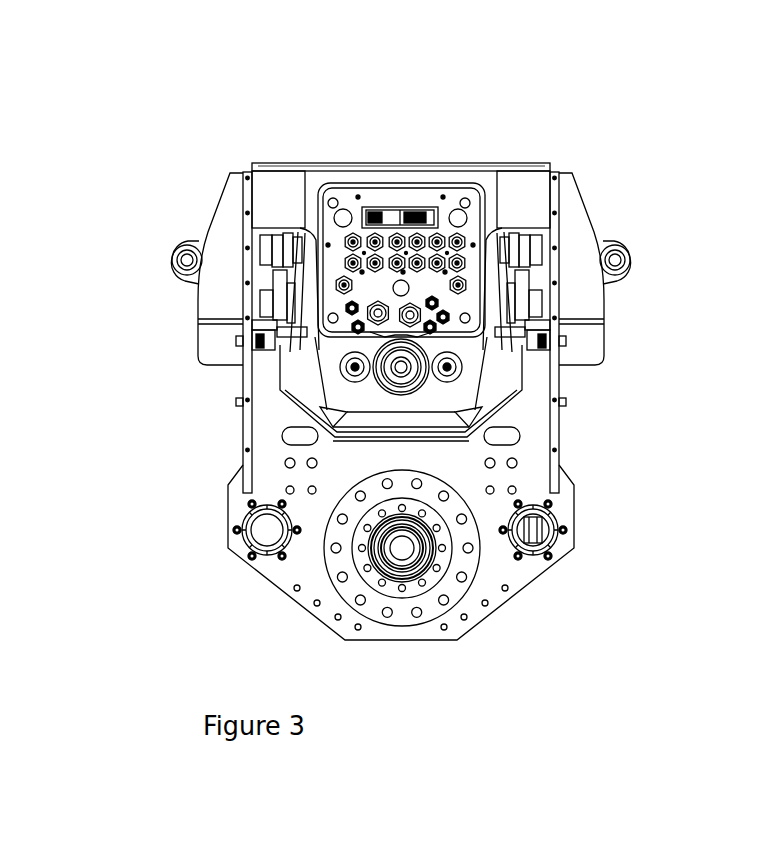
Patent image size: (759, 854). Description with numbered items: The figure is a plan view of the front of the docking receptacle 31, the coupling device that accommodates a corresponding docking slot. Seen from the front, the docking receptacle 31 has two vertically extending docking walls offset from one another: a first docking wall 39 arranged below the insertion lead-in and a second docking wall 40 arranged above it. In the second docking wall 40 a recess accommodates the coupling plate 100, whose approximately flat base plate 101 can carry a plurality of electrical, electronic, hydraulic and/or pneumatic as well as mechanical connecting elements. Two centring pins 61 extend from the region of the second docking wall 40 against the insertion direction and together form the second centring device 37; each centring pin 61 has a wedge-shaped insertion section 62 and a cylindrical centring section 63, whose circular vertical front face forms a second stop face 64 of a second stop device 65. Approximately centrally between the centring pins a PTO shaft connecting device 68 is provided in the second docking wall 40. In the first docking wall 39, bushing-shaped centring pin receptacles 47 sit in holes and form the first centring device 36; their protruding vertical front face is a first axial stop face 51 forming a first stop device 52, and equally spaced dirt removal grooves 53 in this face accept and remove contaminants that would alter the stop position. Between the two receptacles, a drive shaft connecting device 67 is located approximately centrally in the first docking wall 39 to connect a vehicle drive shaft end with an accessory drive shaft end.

The docking receptacle 31 is at (208, 134).
The coupling plate 100 is at (401, 182).
The base plate 101 is at (330, 230).
The second docking wall 40 is at (478, 178).
The PTO shaft connecting device 68 is at (415, 362).
The centring pin 61 is at (456, 364).
The wedge-shaped insertion section 62 is at (447, 367).
The cylindrical centring section 63 is at (447, 367).
The second stop face 64 is at (343, 364).
The second stop device 65 is at (355, 367).
The second centring device 37 is at (462, 368).
The first axial stop face 51 is at (247, 513).
The first stop device 52 is at (219, 559).
The dirt removal groove 53 is at (250, 555).
The bushing-shaped centring pin receptacle 47 is at (262, 532).
The first centring device 36 is at (548, 518).
The first docking wall 39 is at (495, 557).
The drive shaft connecting device 67 is at (422, 567).